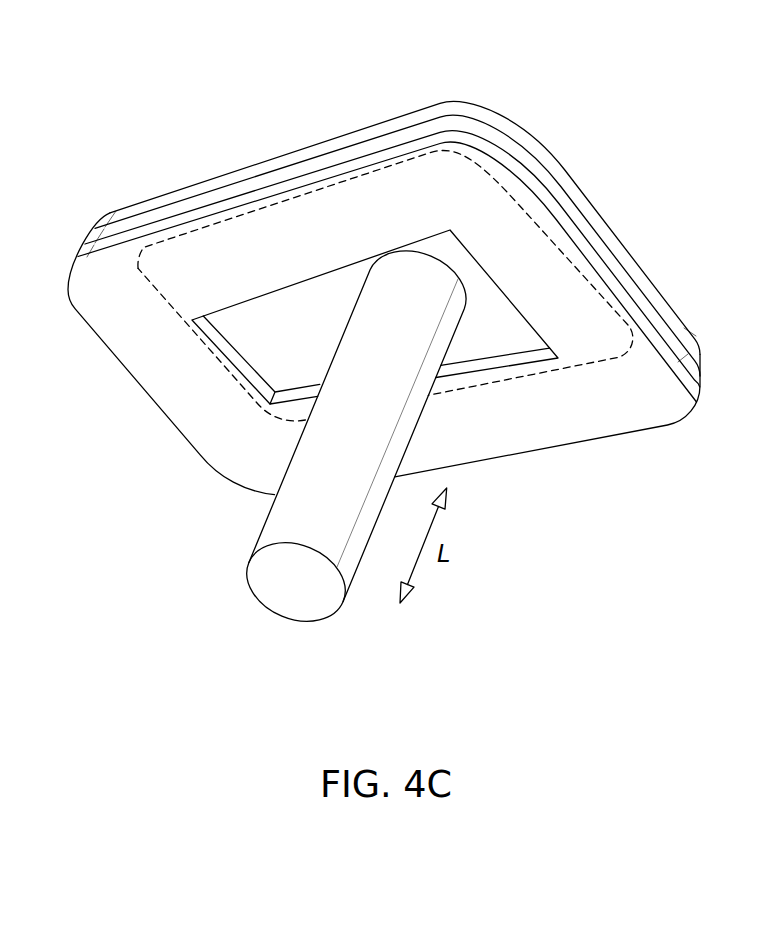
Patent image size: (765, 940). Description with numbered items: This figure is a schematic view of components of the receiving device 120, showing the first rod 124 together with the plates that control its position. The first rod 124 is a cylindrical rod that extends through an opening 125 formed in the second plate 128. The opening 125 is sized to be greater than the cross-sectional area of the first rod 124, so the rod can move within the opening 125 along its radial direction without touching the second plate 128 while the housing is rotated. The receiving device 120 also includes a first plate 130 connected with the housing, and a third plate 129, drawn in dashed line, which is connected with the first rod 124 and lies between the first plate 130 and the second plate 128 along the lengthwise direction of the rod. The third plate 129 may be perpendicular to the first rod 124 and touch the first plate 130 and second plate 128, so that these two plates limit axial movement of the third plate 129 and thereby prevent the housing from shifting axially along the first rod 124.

The receiving device 120 is at (553, 42).
The first rod 124 is at (284, 527).
The opening 125 is at (270, 342).
The second plate 128 is at (539, 181).
The third plate 129 is at (605, 274).
The first plate 130 is at (494, 110).